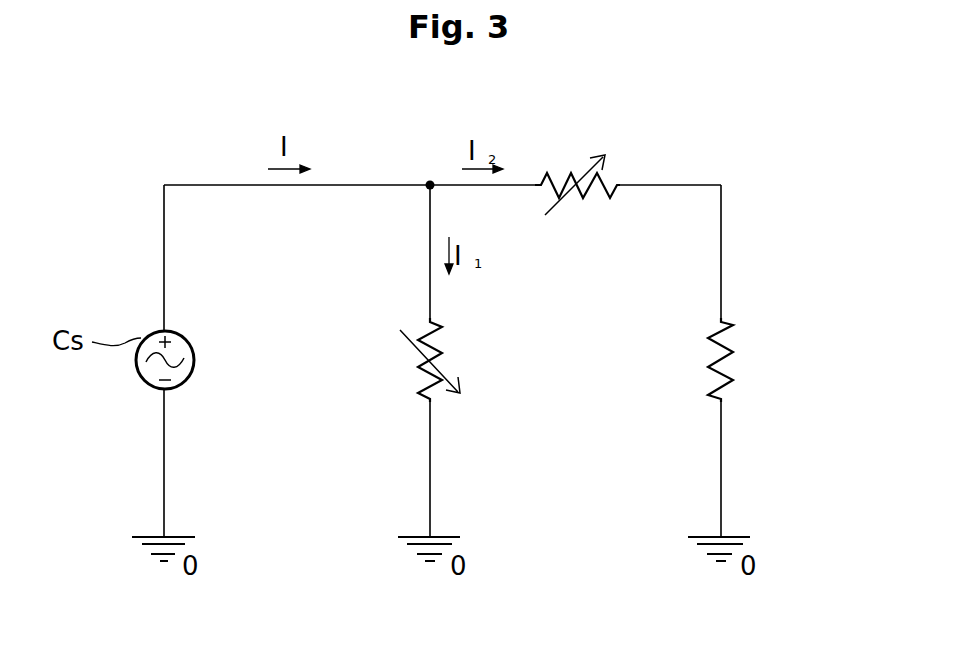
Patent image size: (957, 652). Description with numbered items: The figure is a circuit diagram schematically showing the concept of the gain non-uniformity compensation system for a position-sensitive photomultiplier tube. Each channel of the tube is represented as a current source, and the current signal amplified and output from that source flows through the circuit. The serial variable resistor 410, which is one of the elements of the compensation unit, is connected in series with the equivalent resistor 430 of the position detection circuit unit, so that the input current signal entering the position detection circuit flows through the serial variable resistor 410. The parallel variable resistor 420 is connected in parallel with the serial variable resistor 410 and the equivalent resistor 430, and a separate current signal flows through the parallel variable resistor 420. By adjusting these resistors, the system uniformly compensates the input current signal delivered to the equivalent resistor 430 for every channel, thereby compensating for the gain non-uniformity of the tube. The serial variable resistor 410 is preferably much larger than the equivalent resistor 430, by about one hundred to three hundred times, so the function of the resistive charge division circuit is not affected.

The serial variable resistor 410 is at (557, 176).
The parallel variable resistor 420 is at (443, 348).
The equivalent resistor 430 is at (735, 343).